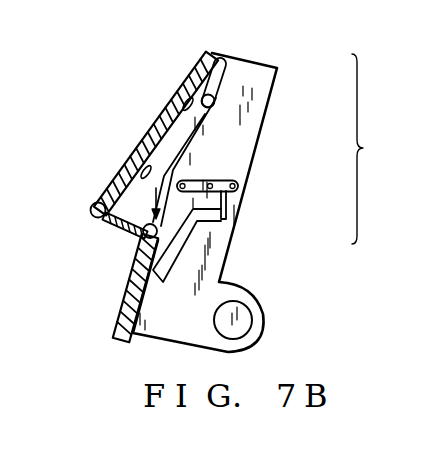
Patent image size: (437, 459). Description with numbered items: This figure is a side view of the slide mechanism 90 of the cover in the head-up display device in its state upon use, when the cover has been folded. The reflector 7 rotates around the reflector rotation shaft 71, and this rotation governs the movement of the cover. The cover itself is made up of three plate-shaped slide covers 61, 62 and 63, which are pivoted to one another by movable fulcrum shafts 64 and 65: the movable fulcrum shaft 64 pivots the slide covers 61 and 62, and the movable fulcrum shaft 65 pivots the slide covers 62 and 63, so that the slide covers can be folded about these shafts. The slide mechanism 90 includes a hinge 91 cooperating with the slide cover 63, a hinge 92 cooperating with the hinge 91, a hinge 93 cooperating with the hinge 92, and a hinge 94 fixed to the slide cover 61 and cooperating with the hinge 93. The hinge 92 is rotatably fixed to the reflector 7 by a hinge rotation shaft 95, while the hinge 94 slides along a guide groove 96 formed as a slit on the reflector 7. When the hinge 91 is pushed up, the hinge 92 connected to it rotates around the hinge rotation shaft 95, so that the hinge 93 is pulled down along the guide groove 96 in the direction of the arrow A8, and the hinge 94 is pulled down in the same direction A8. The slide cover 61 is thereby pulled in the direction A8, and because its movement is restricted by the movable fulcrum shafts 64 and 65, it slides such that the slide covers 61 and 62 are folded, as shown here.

The reflector 7 is at (241, 62).
The slide cover 61 is at (158, 122).
The arrow A8 is at (130, 192).
The movable fulcrum shaft 64 is at (91, 206).
The slide cover 62 is at (140, 230).
The movable fulcrum shaft 65 is at (141, 236).
The slide cover 63 is at (125, 292).
The guide groove 96 is at (226, 83).
The hinge 94 is at (215, 108).
The hinge 93 is at (198, 147).
The hinge 92 is at (203, 178).
The slide mechanism 90 is at (375, 149).
The hinge rotation shaft 95 is at (240, 198).
The hinge 91 is at (234, 228).
The reflector rotation shaft 71 is at (244, 320).